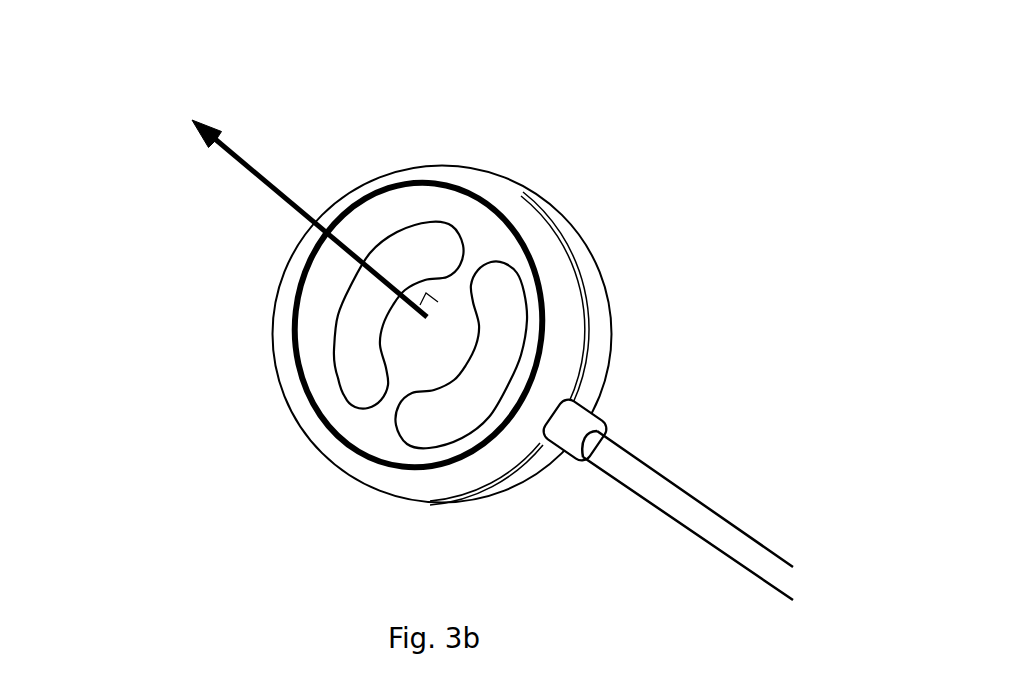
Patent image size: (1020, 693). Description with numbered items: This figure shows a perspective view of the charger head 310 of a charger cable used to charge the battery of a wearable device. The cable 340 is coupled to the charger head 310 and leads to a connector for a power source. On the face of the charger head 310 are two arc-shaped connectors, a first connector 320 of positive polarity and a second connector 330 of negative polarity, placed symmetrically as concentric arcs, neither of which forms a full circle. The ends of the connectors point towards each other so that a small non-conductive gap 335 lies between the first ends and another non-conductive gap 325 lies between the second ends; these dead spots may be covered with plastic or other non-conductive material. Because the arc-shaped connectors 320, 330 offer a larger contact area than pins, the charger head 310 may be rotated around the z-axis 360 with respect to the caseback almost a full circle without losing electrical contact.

The charger head 310 is at (582, 227).
The first connector 320 is at (360, 350).
The non-conductive gap 325 is at (455, 282).
The second connector 330 is at (498, 283).
The non-conductive gap 335 is at (473, 247).
The cable 340 is at (707, 500).
The z-axis 360 is at (277, 190).